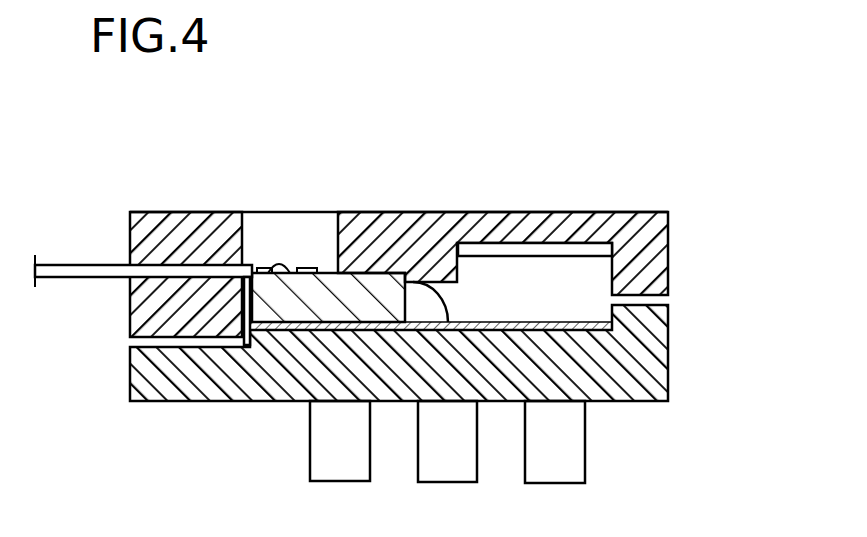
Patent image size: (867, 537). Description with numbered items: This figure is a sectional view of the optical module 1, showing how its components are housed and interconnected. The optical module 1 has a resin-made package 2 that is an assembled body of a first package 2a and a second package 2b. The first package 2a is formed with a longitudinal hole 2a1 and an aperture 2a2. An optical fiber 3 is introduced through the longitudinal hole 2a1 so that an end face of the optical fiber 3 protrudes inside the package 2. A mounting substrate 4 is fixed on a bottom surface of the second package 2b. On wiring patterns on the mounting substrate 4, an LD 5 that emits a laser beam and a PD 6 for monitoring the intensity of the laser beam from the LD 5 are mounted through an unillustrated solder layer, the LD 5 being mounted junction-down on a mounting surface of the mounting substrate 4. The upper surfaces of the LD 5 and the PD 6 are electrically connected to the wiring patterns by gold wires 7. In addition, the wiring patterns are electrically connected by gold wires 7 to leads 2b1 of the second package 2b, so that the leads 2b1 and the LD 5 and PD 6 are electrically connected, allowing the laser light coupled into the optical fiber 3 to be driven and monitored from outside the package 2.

The optical module 1 is at (278, 197).
The package 2 is at (748, 243).
The first package 2a is at (676, 262).
The second package 2b is at (676, 344).
The longitudinal hole 2a1 is at (193, 270).
The aperture 2a2 is at (340, 237).
The leads 2b1 is at (425, 327).
The optical fiber 3 is at (82, 264).
The mounting substrate 4 is at (283, 297).
The LD 5 is at (260, 267).
The PD 6 is at (307, 267).
The gold wires 7 is at (450, 297).